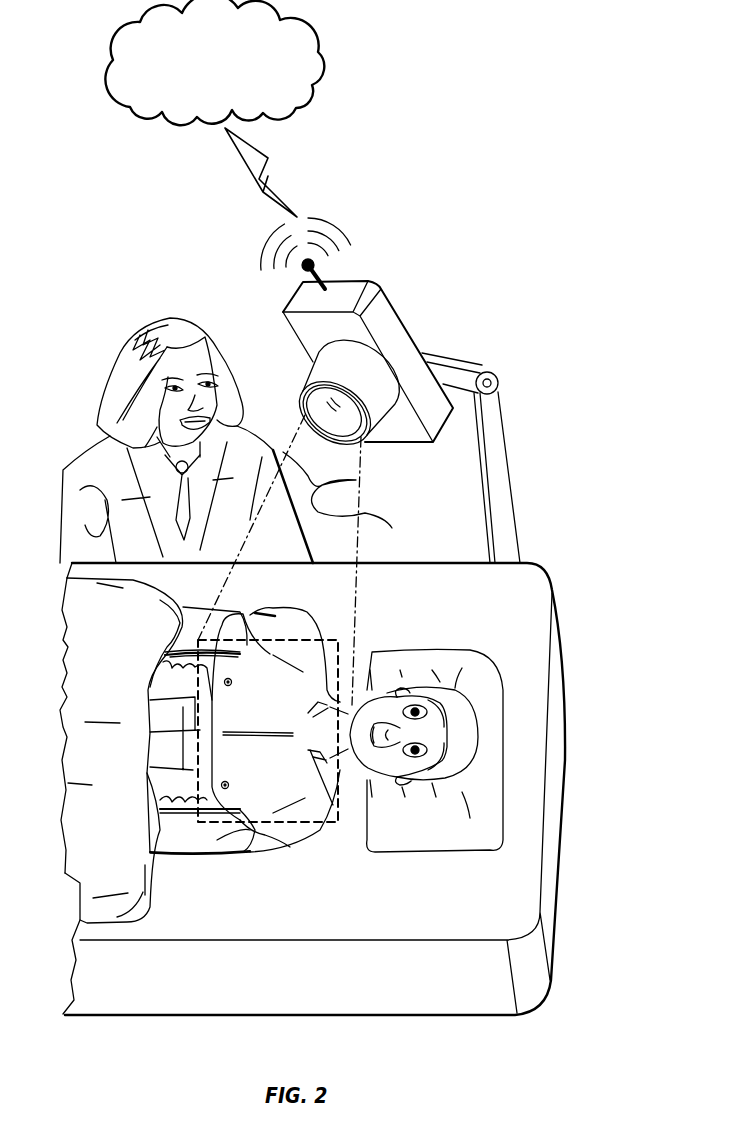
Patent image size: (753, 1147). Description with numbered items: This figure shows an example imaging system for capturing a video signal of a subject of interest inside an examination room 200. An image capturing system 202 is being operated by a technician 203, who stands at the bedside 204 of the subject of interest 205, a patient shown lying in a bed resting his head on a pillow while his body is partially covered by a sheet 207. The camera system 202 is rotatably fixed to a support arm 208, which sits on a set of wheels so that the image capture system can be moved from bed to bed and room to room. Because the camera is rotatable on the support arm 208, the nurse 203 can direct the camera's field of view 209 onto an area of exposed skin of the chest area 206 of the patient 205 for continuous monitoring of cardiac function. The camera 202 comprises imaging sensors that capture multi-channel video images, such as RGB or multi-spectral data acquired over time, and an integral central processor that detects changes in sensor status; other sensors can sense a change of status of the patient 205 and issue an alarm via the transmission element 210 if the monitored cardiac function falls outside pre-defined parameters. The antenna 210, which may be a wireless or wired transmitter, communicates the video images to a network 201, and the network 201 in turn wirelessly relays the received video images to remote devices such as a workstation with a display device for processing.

The examination room 200 is at (423, 124).
The network 201 is at (110, 97).
The image capturing system 202 is at (388, 326).
The technician 203 is at (163, 318).
The bedside 204 is at (542, 865).
The subject of interest 205 is at (478, 733).
The chest area 206 is at (288, 823).
The sheet 207 is at (78, 884).
The support arm 208 is at (505, 422).
The field of view 209 is at (356, 499).
The transmission element 210 is at (320, 278).